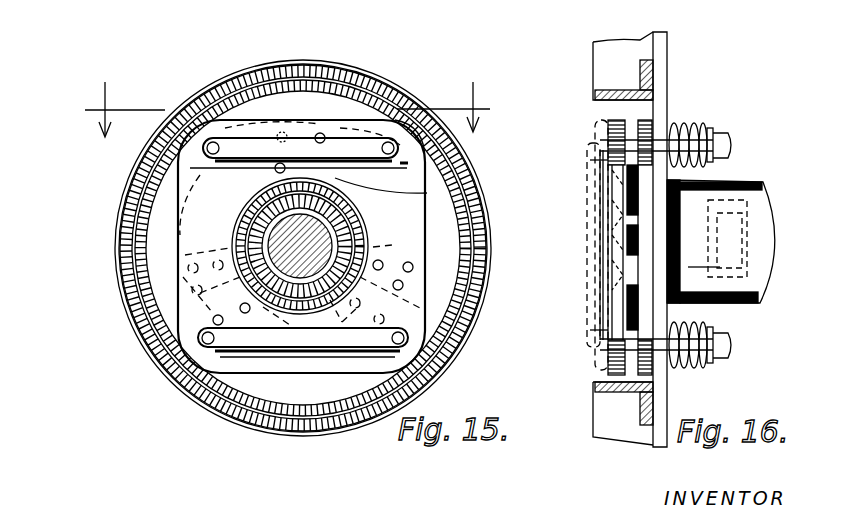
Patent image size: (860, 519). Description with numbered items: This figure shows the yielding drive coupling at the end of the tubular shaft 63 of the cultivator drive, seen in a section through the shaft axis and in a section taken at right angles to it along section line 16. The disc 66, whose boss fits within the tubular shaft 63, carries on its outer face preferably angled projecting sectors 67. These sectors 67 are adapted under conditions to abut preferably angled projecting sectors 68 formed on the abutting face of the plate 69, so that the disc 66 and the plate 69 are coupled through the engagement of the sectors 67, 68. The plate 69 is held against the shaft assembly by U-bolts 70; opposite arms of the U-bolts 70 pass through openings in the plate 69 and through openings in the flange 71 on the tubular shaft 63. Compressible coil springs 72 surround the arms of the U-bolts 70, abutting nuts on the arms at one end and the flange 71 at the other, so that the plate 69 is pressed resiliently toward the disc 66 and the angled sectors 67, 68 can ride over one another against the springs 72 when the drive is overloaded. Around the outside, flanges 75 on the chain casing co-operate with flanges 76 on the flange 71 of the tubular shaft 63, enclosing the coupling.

In FIG. 15, the section line 16- 16 is at (288, 92).
In FIG. 16, the tubular shaft 63 is at (735, 180).
In FIG. 15, the disc 66 is at (405, 171).
In FIG. 16, the disc 66 is at (653, 122).
In FIG. 15, the angled projecting sectors 67 is at (187, 255).
In FIG. 16, the angled projecting sectors 67 is at (623, 282).
In FIG. 15, the angled projecting sectors 68 is at (215, 168).
In FIG. 16, the angled projecting sectors 68 is at (623, 217).
In FIG. 15, the plate 69 is at (447, 345).
In FIG. 16, the plate 69 is at (612, 133).
In FIG. 15, the U-bolts 70 is at (293, 338).
In FIG. 16, the U-bolts 70 is at (598, 325).
In FIG. 15, the flange 71 is at (437, 272).
In FIG. 16, the flange 71 is at (665, 60).
In FIG. 16, the compressible coil springs 72 is at (703, 128).
In FIG. 15, the flanges 75 is at (365, 83).
In FIG. 15, the flanges 76 is at (287, 140).
In FIG. 16, the flanges 76 is at (620, 75).